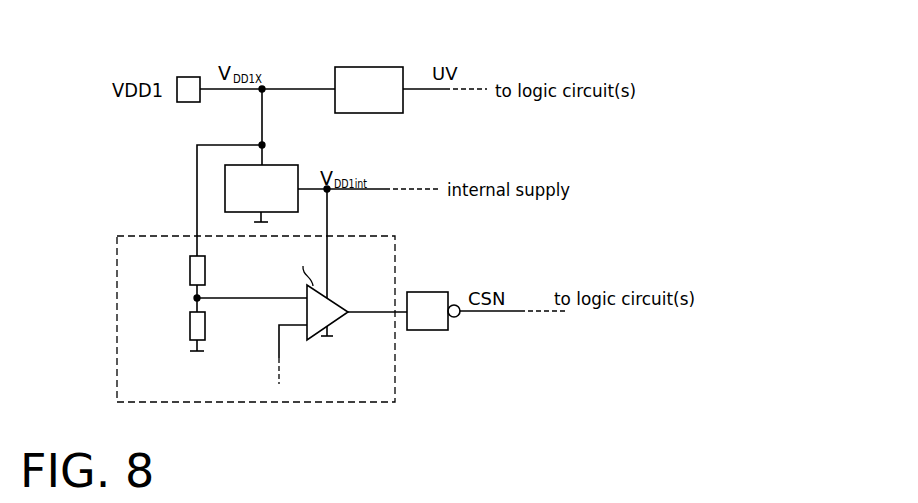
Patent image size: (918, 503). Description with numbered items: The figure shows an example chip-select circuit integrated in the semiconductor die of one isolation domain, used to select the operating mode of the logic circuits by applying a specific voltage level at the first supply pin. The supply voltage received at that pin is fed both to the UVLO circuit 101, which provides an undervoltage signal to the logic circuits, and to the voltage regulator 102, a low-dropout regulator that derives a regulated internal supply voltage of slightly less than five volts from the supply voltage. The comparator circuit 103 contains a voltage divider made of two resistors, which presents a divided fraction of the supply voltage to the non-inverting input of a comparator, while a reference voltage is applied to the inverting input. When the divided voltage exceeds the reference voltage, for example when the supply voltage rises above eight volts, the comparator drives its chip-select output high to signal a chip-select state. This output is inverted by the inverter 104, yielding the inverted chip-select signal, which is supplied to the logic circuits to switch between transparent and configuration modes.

The UVLO circuit 101 is at (372, 67).
The voltage regulator 102 is at (285, 165).
The comparator circuit 103 is at (257, 334).
The inverter 104 is at (430, 331).